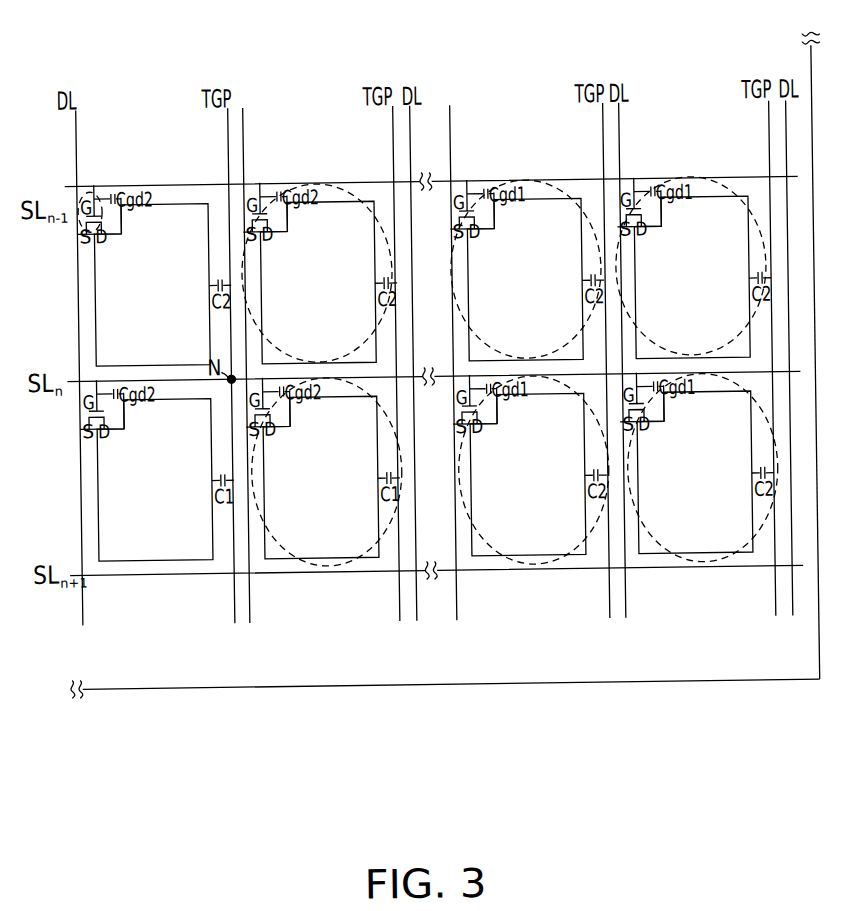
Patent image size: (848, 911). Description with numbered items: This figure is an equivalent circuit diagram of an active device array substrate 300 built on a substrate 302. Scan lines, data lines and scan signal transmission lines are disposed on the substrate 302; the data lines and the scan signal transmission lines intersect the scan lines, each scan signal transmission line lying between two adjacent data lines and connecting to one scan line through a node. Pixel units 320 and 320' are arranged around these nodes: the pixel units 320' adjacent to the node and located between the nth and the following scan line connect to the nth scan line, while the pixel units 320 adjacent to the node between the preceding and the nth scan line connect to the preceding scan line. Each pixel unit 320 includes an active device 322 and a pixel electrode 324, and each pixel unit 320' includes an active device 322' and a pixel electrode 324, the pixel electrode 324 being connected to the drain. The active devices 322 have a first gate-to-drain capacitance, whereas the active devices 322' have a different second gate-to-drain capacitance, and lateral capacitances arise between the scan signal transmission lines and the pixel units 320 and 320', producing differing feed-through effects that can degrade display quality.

The active device array substrate 300 is at (745, 686).
The substrate 302 is at (795, 649).
The pixel unit 320 is at (427, 361).
The pixel unit 320' is at (237, 534).
The active device 322 is at (101, 181).
The active device 322' is at (104, 516).
The pixel electrode 324 is at (170, 199).